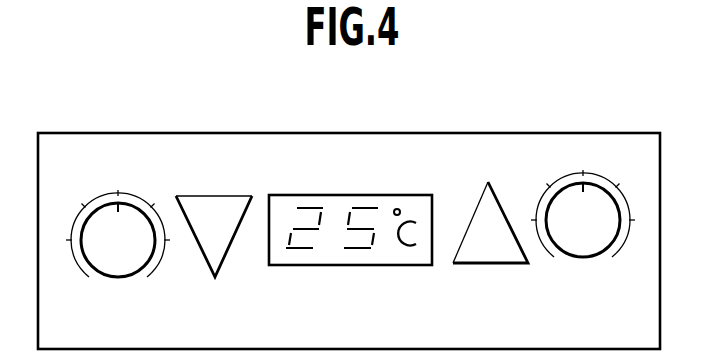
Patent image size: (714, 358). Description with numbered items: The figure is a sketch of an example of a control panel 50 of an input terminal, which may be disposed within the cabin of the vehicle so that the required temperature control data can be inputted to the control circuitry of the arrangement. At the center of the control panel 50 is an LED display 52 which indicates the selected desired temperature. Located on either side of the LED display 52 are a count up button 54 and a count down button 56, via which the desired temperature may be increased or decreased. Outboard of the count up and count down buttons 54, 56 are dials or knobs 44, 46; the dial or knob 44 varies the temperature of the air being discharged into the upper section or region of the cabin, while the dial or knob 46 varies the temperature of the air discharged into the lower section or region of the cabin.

The control panel 50 is at (157, 145).
The dial or knob 44 is at (135, 268).
The dial or knob 46 is at (575, 248).
The LED display 52 is at (283, 212).
The count up button 54 is at (477, 210).
The count down button 56 is at (203, 196).